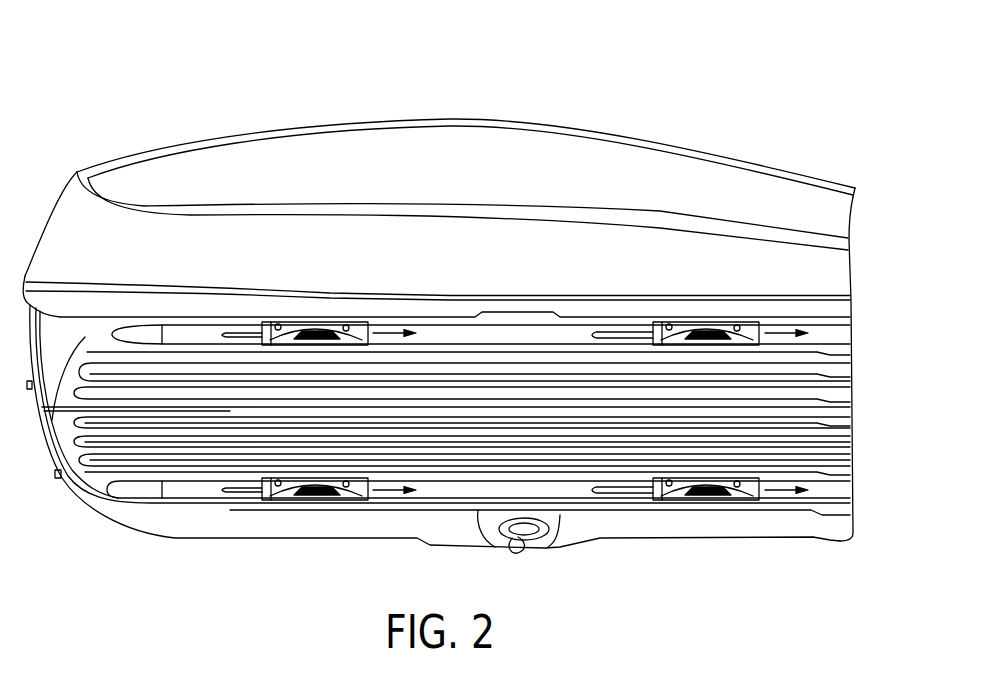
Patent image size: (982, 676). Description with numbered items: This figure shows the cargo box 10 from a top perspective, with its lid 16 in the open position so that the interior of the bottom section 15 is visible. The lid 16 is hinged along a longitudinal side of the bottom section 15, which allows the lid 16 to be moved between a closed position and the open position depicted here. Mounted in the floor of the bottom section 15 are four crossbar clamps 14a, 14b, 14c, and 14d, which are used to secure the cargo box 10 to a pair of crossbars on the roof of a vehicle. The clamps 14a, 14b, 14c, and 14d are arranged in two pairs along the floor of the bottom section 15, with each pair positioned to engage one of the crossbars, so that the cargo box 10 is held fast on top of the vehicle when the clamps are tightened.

The cargo box 10 is at (803, 105).
The crossbar clamp 14a is at (683, 489).
The crossbar clamp 14b is at (290, 489).
The crossbar clamp 14c is at (697, 327).
The crossbar clamp 14d is at (313, 325).
The bottom section 15 is at (134, 527).
The lid 16 is at (72, 208).